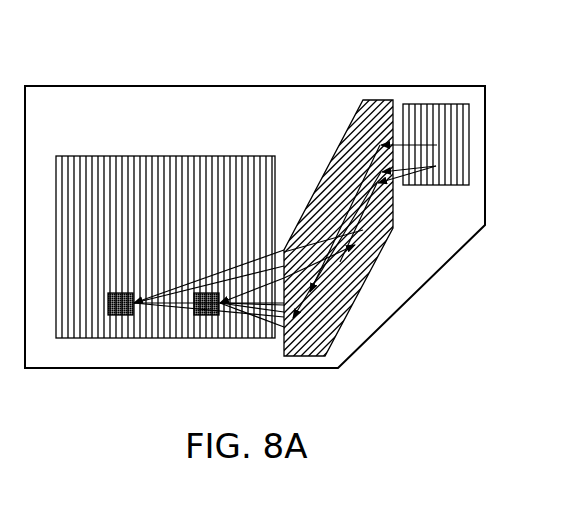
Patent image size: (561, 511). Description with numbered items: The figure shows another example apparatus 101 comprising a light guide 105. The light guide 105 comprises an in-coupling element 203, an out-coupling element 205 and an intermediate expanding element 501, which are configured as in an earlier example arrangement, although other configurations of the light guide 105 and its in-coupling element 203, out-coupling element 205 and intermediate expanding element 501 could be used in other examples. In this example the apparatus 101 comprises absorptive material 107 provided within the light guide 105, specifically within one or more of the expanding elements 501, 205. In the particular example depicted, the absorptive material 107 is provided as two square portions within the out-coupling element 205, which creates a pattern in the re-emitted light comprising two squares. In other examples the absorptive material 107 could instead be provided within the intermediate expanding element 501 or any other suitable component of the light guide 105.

The apparatus 101 is at (343, 64).
The light guide 105 is at (440, 85).
The absorptive material 107 is at (116, 316).
The in-coupling element 203 is at (430, 187).
The out-coupling element 205 is at (235, 338).
The intermediate expanding element 501 is at (372, 273).